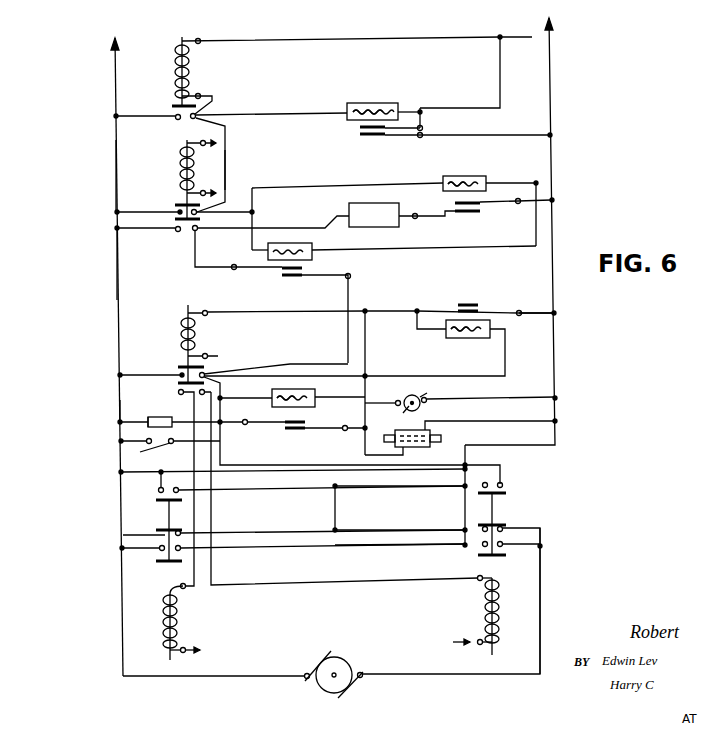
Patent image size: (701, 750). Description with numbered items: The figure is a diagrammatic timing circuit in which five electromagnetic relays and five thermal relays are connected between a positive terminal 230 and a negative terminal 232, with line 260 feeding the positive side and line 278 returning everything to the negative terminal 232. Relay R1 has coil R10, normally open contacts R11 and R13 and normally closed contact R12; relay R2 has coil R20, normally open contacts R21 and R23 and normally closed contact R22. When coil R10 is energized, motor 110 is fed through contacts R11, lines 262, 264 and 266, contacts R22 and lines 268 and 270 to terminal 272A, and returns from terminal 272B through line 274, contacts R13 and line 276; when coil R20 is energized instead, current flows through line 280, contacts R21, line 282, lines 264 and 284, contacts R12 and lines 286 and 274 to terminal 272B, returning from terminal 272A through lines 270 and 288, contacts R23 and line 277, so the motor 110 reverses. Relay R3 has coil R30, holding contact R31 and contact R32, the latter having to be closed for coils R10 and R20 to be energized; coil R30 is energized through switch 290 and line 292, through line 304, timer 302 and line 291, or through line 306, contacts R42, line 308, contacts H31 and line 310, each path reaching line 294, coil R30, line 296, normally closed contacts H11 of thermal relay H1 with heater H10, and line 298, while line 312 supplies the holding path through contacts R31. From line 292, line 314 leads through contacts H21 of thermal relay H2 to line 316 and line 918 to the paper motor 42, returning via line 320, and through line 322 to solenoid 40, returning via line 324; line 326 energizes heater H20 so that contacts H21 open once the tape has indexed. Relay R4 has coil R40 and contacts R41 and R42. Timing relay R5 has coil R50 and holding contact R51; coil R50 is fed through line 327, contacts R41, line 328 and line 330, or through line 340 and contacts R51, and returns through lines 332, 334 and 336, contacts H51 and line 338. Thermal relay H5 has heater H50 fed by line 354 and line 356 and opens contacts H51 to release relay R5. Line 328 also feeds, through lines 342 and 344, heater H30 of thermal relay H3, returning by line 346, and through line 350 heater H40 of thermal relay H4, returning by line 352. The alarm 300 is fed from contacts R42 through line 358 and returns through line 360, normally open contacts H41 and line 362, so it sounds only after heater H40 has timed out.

The positive terminal 230 is at (112, 346).
The negative terminal 232 is at (517, 223).
The line 260 is at (116, 178).
The line 278 is at (556, 352).
The coil of relay R5 R50 is at (176, 74).
The timing relay R5 is at (196, 86).
The line 332 is at (374, 37).
The line 334 is at (500, 54).
The line 340 is at (143, 116).
The holding contact of relay R5 R51 is at (178, 120).
The line 330 is at (216, 108).
The line 328 is at (228, 162).
The line 354 is at (274, 113).
The thermal relay H5 is at (375, 103).
The heater coil of thermal relay H5 H50 is at (386, 111).
The line 356 is at (418, 108).
The line 336 is at (424, 119).
The contacts of thermal relay H5 H51 is at (362, 135).
The line 338 is at (500, 132).
The coil of relay R4 R40 is at (197, 166).
The relay R4 is at (175, 174).
The contact of relay R4 R41 is at (180, 208).
The line 327 is at (130, 209).
The line 342 is at (238, 210).
The contact of relay R4 R42 is at (178, 230).
The line 306 is at (140, 245).
The line 344 is at (252, 245).
The line 350 is at (356, 184).
The heater coil of thermal relay H4 H40 is at (466, 168).
The thermal relay H4 is at (442, 188).
The line 352 is at (503, 181).
The line 362 is at (522, 200).
The contacts of thermal relay H4 H41 is at (482, 212).
The line 360 is at (436, 219).
The alarm 300 is at (392, 228).
The line 358 is at (289, 225).
The heater coil of thermal relay H3 H30 is at (300, 249).
The thermal relay H3 is at (314, 257).
The line 346 is at (404, 250).
The line 308 is at (218, 268).
The contacts of thermal relay H3 H31 is at (292, 277).
The line 310 is at (352, 280).
The coil of relay R3 R30 is at (180, 331).
The relay R3 is at (200, 350).
The line 296 is at (291, 313).
The line 294 is at (220, 356).
The line 312 is at (130, 372).
The holding contact of relay R3 R31 is at (178, 369).
The contacts of thermal relay H1 H11 is at (468, 304).
The line 298 is at (534, 305).
The heater coil of thermal relay H1 H10 is at (475, 339).
The thermal relay H1 is at (449, 338).
The contact of relay R3 R32 is at (178, 392).
The line 292 is at (222, 440).
The line 326 is at (250, 391).
The heater coil of thermal relay H2 H20 is at (318, 390).
The thermal relay H2 is at (316, 404).
The line 304 is at (130, 418).
The line 291 is at (186, 416).
The electro-responsive timer 302 is at (146, 426).
The line 314 is at (237, 424).
The contacts of thermal relay H2 H21 is at (292, 430).
The line 316 is at (350, 431).
The switch 290 is at (158, 442).
The switch contact 918 is at (390, 402).
The paper motor 42 is at (426, 398).
The line 320 is at (478, 398).
The line 324 is at (470, 421).
The solenoid 40 is at (428, 447).
The line 322 is at (366, 457).
The line 280 is at (271, 473).
The contact of relay R1 R11 is at (158, 491).
The line 262 is at (264, 496).
The line 282 is at (403, 487).
The line 264 is at (338, 506).
The contact of relay R2 R21 is at (504, 491).
The line 286 is at (122, 533).
The contact of relay R1 R12 is at (158, 533).
The line 284 is at (272, 531).
The line 266 is at (397, 530).
The contact of relay R2 R22 is at (504, 531).
The line 268 is at (548, 528).
The contact of relay R1 R13 is at (160, 551).
The line 276 is at (266, 548).
The line 277 is at (455, 548).
The contact of relay R2 R23 is at (503, 548).
The line 288 is at (546, 545).
The line 270 is at (544, 614).
The coil of relay R1 R10 is at (165, 621).
The relay R1 is at (182, 628).
The coil of relay R2 R20 is at (499, 610).
The relay R2 is at (484, 622).
The line 274 is at (121, 676).
The motor 110 is at (338, 657).
The terminal of motor 110 272B is at (327, 652).
The terminal of motor 110 272A is at (357, 689).